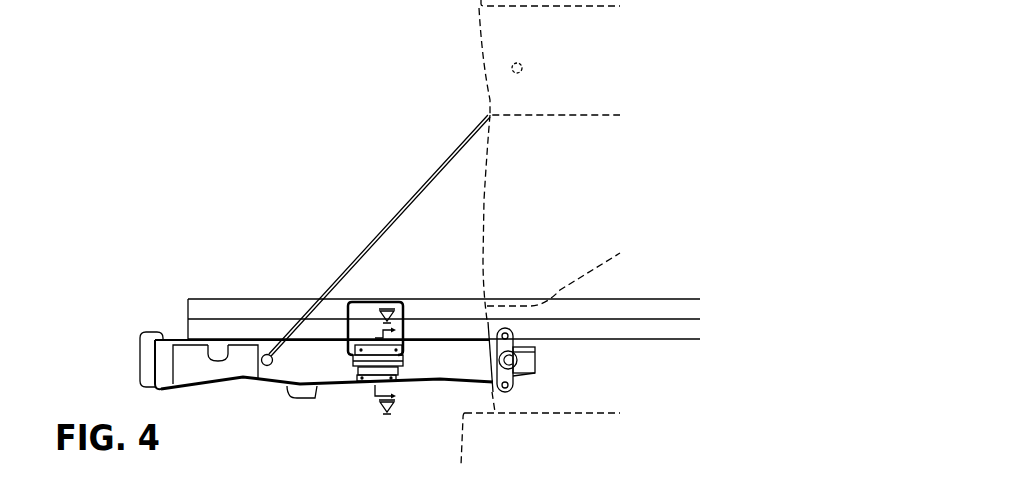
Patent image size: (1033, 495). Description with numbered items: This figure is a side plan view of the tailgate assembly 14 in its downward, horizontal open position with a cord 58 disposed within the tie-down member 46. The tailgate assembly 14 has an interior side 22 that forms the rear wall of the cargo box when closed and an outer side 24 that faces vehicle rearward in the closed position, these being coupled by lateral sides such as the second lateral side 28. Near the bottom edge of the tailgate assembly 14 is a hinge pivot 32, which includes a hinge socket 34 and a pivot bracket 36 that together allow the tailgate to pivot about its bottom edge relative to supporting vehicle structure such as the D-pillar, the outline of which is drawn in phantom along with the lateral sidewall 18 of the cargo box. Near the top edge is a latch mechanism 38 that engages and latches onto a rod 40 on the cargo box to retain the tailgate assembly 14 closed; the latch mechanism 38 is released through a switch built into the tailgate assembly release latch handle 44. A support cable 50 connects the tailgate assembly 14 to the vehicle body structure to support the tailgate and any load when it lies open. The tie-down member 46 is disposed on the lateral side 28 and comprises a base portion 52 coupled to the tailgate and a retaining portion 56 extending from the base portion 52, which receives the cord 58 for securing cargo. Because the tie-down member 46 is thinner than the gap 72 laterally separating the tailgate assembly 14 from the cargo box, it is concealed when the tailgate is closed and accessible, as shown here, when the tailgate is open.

The tailgate assembly 14 is at (237, 388).
The lateral sidewall 18 is at (583, 48).
The interior side 22 is at (180, 340).
The outer side 24 is at (200, 390).
The second lateral side 28 is at (422, 368).
The hinge pivot 32 is at (556, 343).
The hinge socket 34 is at (520, 352).
The pivot bracket 36 is at (491, 386).
The latch mechanism 38 is at (216, 353).
The rod 40 is at (524, 72).
The tailgate assembly release latch handle 44 is at (287, 393).
The tie-down member 46 is at (356, 390).
The support cable 50 is at (424, 183).
The base portion 52 is at (393, 380).
The retaining portion 56 is at (358, 342).
The cord 58 is at (347, 307).
The gap 72 is at (318, 397).